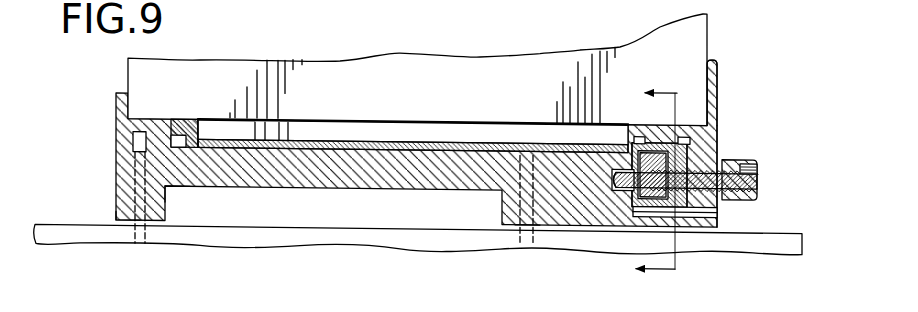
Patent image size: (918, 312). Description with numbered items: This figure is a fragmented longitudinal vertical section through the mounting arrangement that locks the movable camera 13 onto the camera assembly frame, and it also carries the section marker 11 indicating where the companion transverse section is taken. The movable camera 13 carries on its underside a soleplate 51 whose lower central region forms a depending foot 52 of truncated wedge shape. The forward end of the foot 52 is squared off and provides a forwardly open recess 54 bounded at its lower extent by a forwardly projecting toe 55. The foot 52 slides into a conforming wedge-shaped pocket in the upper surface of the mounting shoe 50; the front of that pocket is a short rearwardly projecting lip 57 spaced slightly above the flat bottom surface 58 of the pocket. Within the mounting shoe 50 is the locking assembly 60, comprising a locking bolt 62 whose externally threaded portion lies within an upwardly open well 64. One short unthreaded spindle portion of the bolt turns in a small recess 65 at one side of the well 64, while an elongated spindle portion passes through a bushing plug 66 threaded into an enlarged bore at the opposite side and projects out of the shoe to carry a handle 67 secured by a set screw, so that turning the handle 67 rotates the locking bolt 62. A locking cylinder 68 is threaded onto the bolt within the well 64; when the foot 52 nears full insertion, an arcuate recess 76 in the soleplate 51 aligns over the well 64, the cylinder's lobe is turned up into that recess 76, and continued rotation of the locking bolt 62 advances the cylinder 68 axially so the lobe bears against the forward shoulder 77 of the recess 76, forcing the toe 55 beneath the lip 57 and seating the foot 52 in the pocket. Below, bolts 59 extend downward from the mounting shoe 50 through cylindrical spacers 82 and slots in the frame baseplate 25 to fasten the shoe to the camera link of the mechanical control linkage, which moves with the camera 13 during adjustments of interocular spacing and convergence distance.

The section line 11- 11 is at (638, 184).
The movable camera 13 is at (450, 60).
The lower baseplate 25 is at (240, 237).
The mounting shoe 50 is at (328, 176).
The soleplate 51 is at (722, 63).
The depending foot 52 is at (412, 141).
The forwardly open recess 54 is at (180, 128).
The toe 55 is at (184, 199).
The lip 57 is at (177, 135).
The bottom surface 58 is at (323, 141).
The bolts 59 is at (135, 186).
The locking assembly 60 is at (679, 171).
The locking bolt 62 is at (637, 172).
The well 64 is at (720, 219).
The recess 65 is at (620, 170).
The bushing plug 66 is at (722, 143).
The handle 67 is at (758, 183).
The locking cylinder 68 is at (663, 145).
The arcuate recess 76 is at (683, 132).
The forward shoulder 77 is at (648, 132).
The cylindrical spacers 82 is at (116, 218).